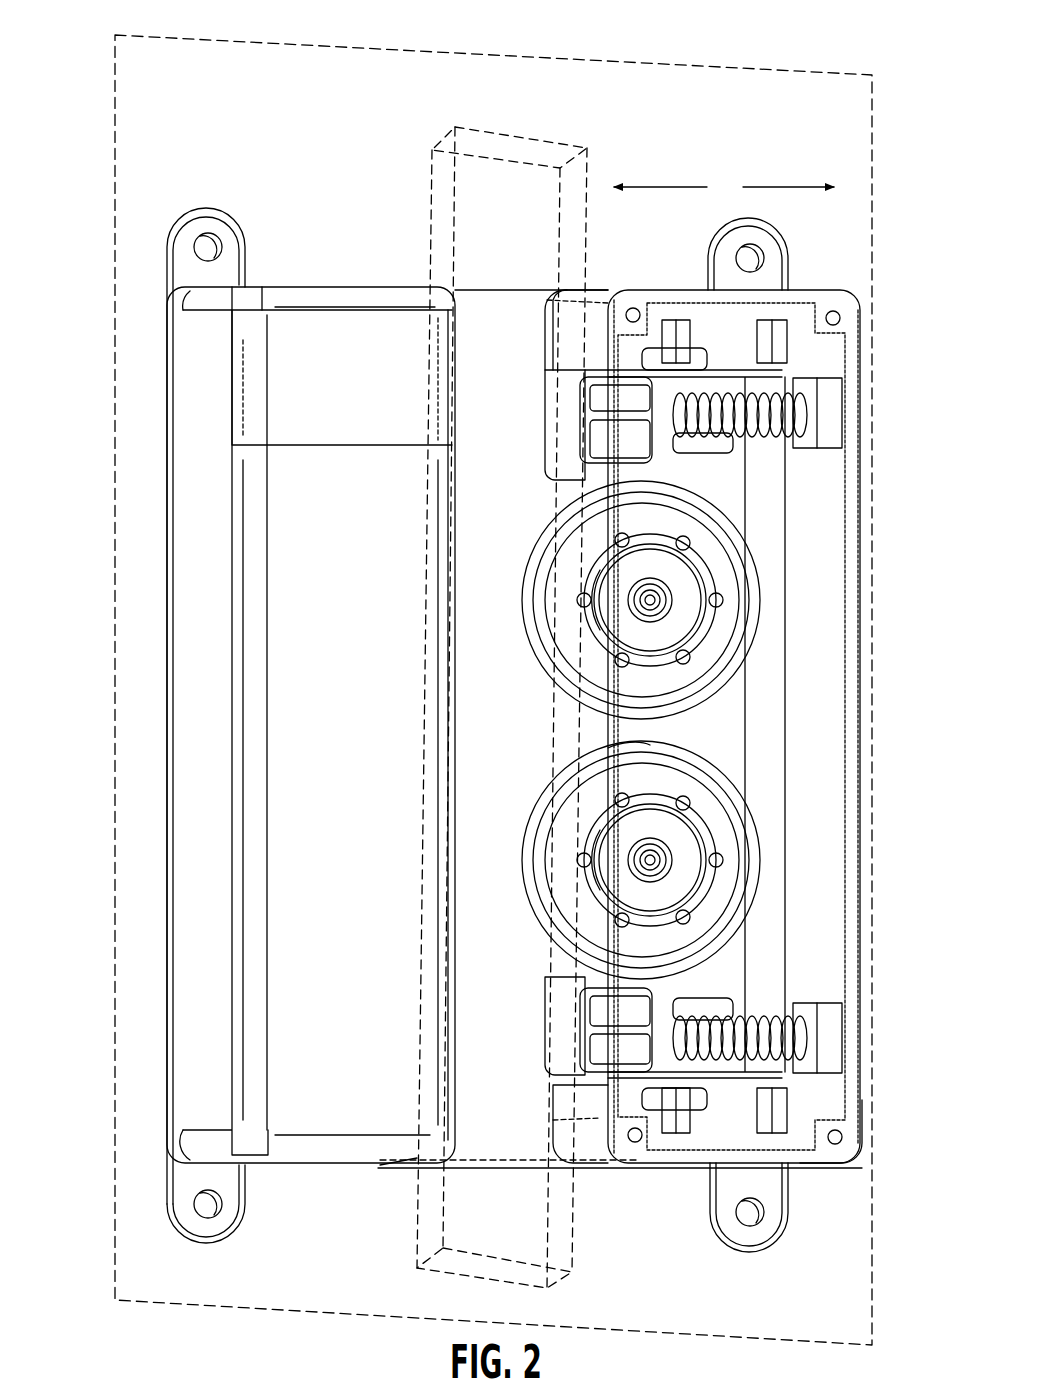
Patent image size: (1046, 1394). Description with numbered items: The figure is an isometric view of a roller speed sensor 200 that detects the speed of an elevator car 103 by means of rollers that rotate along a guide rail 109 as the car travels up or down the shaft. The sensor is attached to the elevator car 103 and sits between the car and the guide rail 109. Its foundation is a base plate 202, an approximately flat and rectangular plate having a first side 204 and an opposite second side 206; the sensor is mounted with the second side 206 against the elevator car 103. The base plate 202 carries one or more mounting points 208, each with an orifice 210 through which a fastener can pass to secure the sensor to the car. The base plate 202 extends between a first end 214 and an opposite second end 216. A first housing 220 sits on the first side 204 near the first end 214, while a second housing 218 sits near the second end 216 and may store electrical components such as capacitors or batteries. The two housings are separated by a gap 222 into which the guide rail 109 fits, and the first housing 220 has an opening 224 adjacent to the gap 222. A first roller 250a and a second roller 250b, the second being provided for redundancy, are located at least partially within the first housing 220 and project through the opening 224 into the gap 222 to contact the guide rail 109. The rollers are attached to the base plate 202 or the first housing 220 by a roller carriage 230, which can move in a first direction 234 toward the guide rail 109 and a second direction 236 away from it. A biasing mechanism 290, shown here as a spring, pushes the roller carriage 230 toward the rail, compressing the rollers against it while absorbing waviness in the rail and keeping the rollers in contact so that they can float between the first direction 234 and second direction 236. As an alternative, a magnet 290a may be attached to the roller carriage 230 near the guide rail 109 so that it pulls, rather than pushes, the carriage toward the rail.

The elevator car 103 is at (752, 70).
The roller speed sensor 200 is at (204, 181).
The guide rail 109 is at (431, 152).
The second side 206 is at (165, 378).
The second end 216 is at (195, 540).
The second housing 218 is at (268, 840).
The first side 204 is at (477, 1022).
The base plate 202 is at (493, 1125).
The gap 222 is at (495, 312).
The opening 224 is at (593, 1085).
The roller carriage 230 is at (566, 447).
The first housing 220 is at (820, 515).
The first end 214 is at (813, 1170).
The mounting point 208 is at (727, 1215).
The orifice 210 is at (753, 1213).
The biasing mechanism 290 is at (800, 418).
The magnet 290a is at (612, 746).
The first roller 250a is at (527, 568).
The second roller 250b is at (527, 838).
The first direction 234 is at (665, 186).
The second direction 236 is at (785, 186).